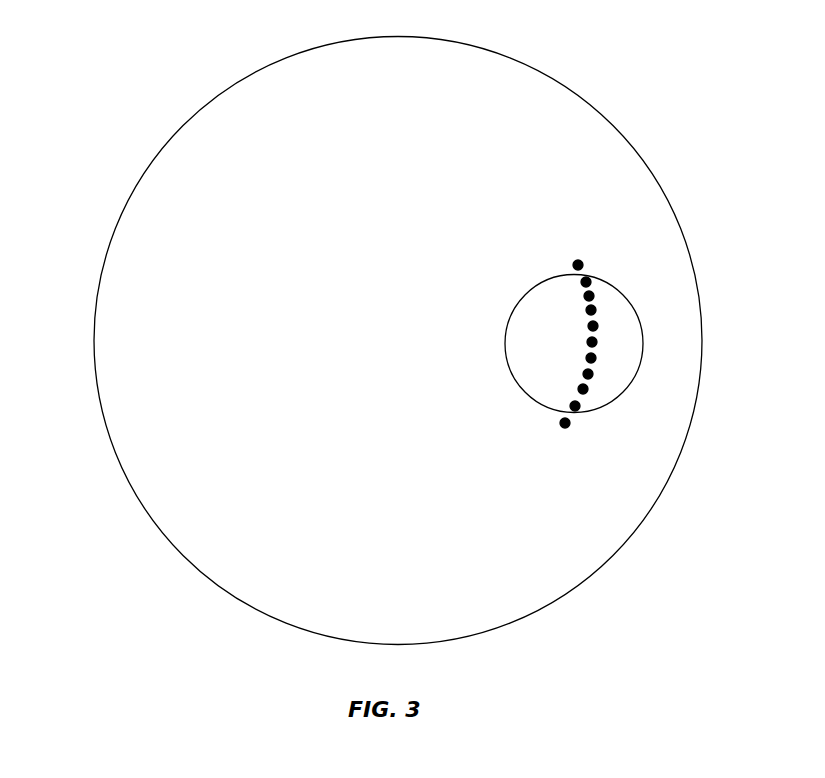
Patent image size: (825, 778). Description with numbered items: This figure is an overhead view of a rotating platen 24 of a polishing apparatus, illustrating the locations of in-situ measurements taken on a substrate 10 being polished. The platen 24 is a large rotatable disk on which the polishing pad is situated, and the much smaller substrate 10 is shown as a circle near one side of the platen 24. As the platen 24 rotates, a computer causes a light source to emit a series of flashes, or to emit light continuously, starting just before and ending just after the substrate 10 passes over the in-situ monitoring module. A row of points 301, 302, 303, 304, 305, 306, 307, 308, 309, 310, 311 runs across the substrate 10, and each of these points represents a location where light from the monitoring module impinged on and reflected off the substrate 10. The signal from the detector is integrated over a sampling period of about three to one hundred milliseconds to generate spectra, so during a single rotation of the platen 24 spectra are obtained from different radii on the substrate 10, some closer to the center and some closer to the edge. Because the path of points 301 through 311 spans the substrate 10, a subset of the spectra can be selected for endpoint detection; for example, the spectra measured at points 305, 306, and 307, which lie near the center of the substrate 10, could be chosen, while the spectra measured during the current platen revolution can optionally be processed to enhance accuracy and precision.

The platen 24 is at (408, 607).
The substrate 10 is at (538, 405).
The point 301 is at (565, 423).
The point 302 is at (575, 406).
The point 303 is at (583, 389).
The point 304 is at (588, 374).
The point 305 is at (591, 358).
The point 306 is at (592, 342).
The point 307 is at (593, 326).
The point 308 is at (591, 310).
The point 309 is at (589, 296).
The point 310 is at (586, 282).
The point 311 is at (578, 265).